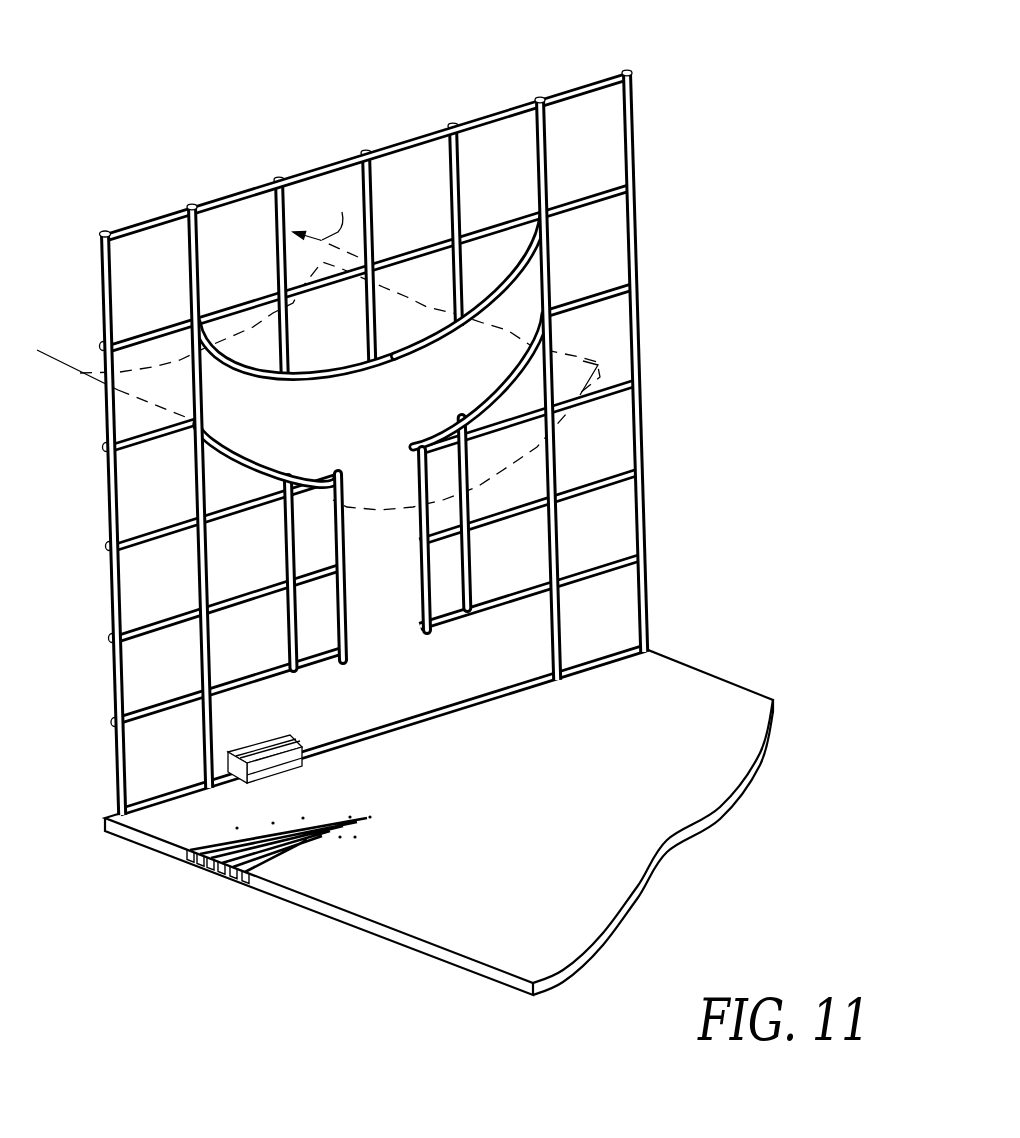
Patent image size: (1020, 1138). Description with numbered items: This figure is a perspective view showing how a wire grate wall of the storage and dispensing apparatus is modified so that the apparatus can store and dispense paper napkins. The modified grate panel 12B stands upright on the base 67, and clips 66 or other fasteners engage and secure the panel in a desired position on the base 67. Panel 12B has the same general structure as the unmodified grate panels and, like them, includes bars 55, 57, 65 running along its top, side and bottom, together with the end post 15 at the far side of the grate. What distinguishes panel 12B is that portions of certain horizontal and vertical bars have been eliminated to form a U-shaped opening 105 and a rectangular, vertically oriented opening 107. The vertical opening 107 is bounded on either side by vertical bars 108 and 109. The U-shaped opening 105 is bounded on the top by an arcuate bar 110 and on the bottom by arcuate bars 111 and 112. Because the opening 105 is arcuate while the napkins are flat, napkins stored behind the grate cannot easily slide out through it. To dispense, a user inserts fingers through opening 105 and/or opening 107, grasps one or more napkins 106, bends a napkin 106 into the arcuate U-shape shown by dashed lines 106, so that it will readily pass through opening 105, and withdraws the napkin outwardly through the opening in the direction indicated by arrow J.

The grate panel 12B is at (495, 90).
The end post 15 is at (622, 75).
The bar 55 is at (252, 192).
The bar 57 is at (118, 318).
The bar 65 is at (540, 683).
The clip 66 is at (287, 757).
The base 67 is at (725, 723).
The U-shaped opening 105 is at (358, 395).
The napkin 106 is at (598, 365).
The rectangular vertically oriented opening 107 is at (380, 612).
The vertical bar 108 is at (345, 646).
The vertical bar 109 is at (428, 606).
The arcuate bar 110 is at (428, 347).
The arcuate bar 111 is at (325, 470).
The arcuate bar 112 is at (480, 408).